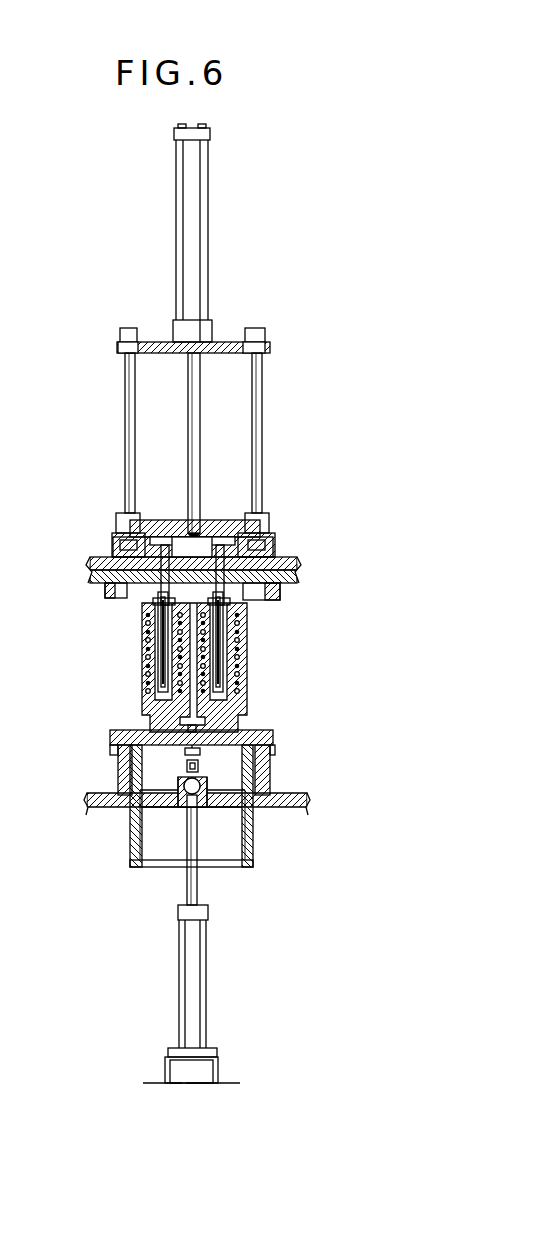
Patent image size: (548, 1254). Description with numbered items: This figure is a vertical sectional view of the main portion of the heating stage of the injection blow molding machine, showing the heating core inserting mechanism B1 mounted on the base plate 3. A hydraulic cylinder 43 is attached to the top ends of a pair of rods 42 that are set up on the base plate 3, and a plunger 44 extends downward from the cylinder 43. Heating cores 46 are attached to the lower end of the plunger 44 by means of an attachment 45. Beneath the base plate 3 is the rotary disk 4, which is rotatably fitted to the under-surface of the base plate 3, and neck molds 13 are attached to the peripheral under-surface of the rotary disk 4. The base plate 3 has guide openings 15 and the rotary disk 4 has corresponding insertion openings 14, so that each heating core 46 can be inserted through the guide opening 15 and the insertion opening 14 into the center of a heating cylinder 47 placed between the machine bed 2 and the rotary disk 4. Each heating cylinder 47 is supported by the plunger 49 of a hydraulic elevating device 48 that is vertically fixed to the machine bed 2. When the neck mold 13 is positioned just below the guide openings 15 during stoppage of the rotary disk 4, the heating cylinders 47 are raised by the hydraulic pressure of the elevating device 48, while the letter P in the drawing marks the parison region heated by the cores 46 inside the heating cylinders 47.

The heating core inserting mechanism B1 is at (207, 238).
The hydraulic cylinder 43 is at (200, 250).
The rods 42 is at (123, 403).
The plunger 44 is at (192, 443).
The attachment 45 is at (203, 520).
The base plate 3 is at (196, 579).
The guide openings 15 is at (283, 558).
The rotary disk 4 is at (300, 583).
The insertion openings 14 is at (128, 598).
The neck molds 13 is at (158, 612).
The housing body P is at (150, 678).
The heating cores 46 is at (203, 655).
The heating cylinder 47 is at (163, 685).
The machine bed 2 is at (100, 798).
The plunger 49 is at (197, 888).
The hydraulic elevating device 48 is at (193, 983).